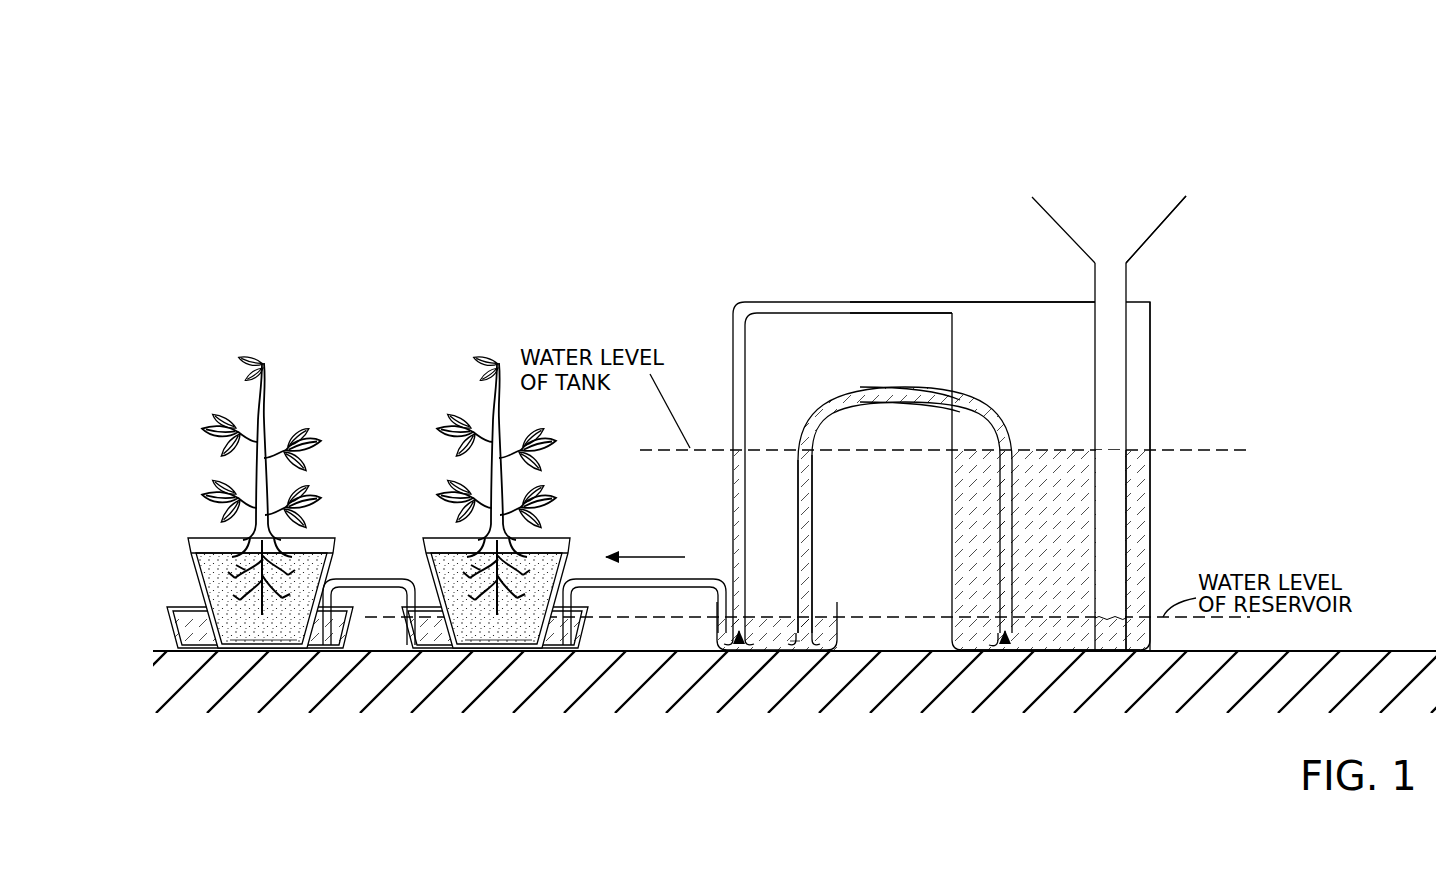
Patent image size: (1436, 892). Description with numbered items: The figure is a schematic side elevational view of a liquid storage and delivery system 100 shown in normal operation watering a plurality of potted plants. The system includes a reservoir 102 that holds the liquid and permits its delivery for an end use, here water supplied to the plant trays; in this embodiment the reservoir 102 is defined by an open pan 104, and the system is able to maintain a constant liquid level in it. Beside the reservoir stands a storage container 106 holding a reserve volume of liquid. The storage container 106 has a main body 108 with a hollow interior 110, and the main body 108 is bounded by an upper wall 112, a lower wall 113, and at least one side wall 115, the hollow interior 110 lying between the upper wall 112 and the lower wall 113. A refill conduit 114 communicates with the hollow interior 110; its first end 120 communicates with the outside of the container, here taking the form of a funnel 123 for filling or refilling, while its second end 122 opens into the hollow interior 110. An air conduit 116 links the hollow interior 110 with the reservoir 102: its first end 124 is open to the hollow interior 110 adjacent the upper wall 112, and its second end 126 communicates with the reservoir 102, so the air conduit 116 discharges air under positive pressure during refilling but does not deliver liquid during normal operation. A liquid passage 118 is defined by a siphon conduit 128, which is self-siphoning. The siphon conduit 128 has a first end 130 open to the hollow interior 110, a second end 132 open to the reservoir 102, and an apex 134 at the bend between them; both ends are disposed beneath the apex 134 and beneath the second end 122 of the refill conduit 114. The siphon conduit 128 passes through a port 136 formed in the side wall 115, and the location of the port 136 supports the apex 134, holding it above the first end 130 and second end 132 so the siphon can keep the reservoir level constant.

The liquid storage and delivery system 100 is at (612, 166).
The reservoir 102 is at (822, 567).
The open pan 104 is at (838, 607).
The storage container 106 is at (1154, 427).
The main body 108 is at (1151, 362).
The hollow interior 110 is at (1039, 528).
The upper wall 112 is at (1027, 299).
The lower wall 113 is at (1055, 658).
The refill conduit 114 is at (1095, 330).
The side wall 115 is at (948, 487).
The air conduit 116 is at (925, 302).
The liquid passage 118 is at (1020, 362).
The first end 120 is at (1127, 268).
The second end 122 is at (1127, 596).
The funnel 123 is at (1153, 225).
The first end 124 is at (944, 302).
The second end 126 is at (735, 545).
The siphon conduit 128 is at (897, 404).
The first end 130 is at (997, 618).
The second end 132 is at (812, 580).
The apex 134 is at (903, 384).
The port 136 is at (953, 399).